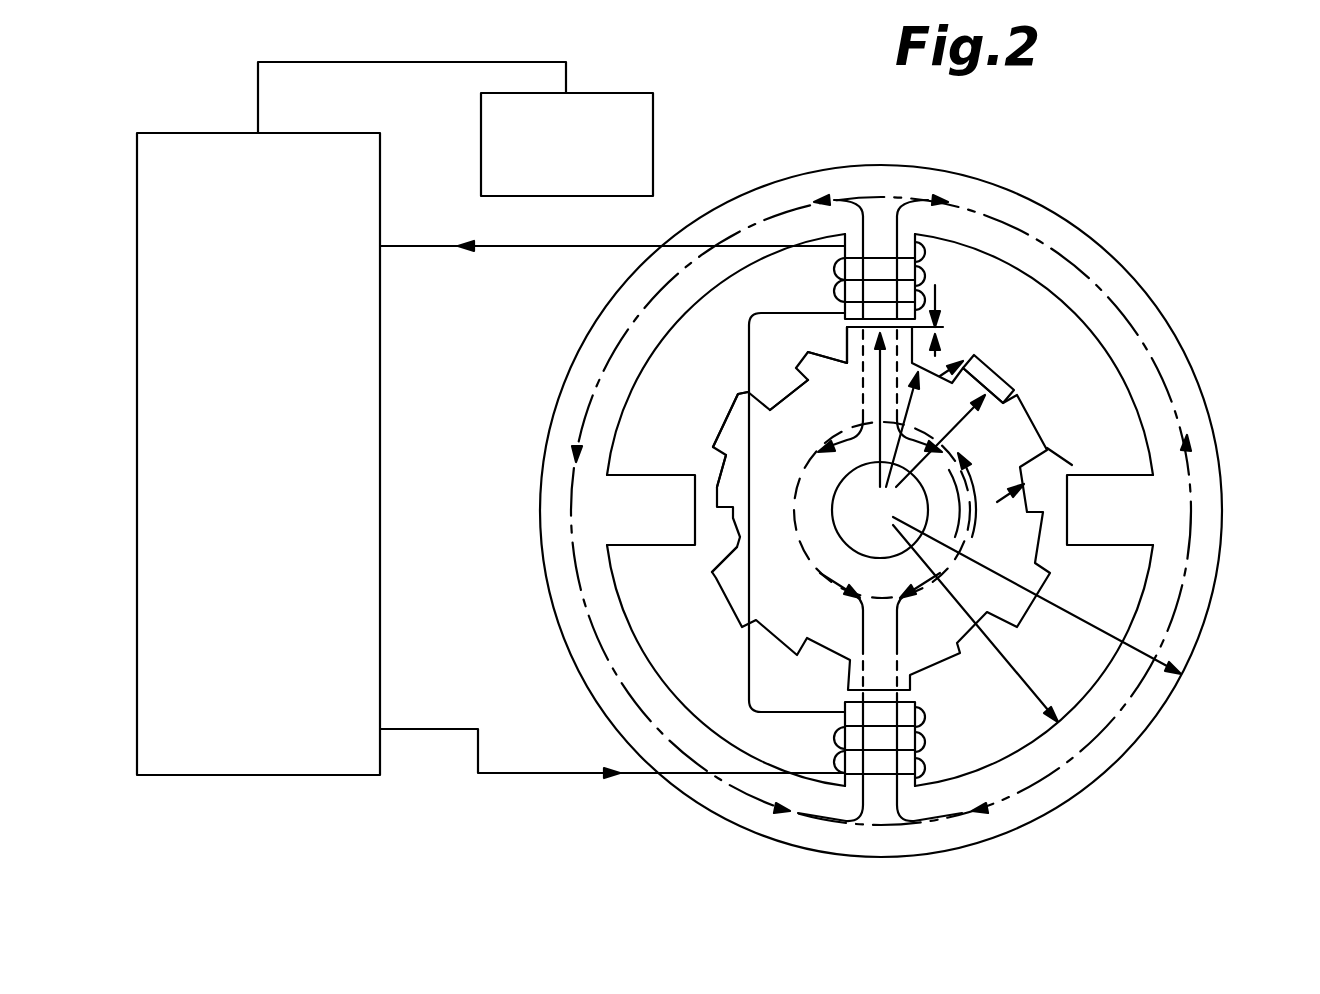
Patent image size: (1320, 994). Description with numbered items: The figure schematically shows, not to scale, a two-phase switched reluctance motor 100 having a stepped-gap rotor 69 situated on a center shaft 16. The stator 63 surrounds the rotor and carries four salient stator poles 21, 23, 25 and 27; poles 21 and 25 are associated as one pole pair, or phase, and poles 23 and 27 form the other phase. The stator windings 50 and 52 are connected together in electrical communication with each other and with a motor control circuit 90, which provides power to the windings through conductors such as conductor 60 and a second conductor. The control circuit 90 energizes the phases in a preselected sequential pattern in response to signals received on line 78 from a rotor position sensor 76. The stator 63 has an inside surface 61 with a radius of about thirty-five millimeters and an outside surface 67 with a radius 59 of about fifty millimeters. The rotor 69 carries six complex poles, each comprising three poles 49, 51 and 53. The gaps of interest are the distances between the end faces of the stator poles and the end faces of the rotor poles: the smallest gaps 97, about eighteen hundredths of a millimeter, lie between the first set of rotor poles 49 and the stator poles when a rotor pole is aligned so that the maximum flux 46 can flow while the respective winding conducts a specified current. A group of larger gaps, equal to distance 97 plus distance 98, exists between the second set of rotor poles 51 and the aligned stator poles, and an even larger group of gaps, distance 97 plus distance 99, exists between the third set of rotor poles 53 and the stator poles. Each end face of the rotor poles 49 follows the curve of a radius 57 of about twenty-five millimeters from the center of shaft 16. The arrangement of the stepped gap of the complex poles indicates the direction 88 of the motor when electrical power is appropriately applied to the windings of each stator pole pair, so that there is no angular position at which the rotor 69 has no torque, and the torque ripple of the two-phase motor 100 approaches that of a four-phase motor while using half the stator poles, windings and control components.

The center shaft 16 is at (864, 524).
The stator pole 21 is at (843, 282).
The stator pole 23 is at (1088, 523).
The stator pole 25 is at (842, 740).
The stator pole 27 is at (633, 523).
The flux 46 is at (600, 643).
The rotor poles (first set) 49 is at (846, 330).
The stator winding 50 is at (926, 270).
The rotor poles (second set) 51 is at (808, 356).
The stator winding 52 is at (923, 717).
The rotor poles (third set) 53 is at (778, 398).
The radius 57 is at (878, 380).
The radius 59 is at (1063, 609).
The conductor 60 is at (537, 248).
The inside surface 61 is at (1100, 680).
The stator 63 is at (1118, 298).
The outside surface 67 is at (1084, 231).
The stepped-gap rotor 69 is at (785, 614).
The rotor position sensor 76 is at (654, 131).
The line 78 is at (492, 62).
The direction 88 is at (972, 492).
The control circuit 90 is at (194, 134).
The gap distance 97 is at (936, 296).
The distance 98 is at (990, 334).
The distance 99 is at (1072, 450).
The switched reluctance motor 100 is at (1166, 124).